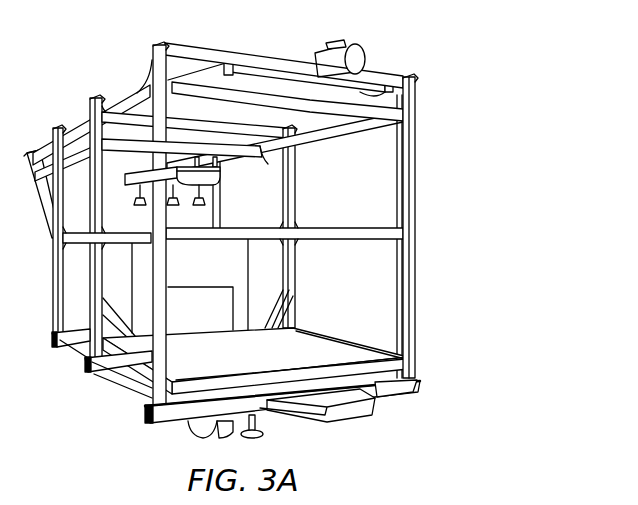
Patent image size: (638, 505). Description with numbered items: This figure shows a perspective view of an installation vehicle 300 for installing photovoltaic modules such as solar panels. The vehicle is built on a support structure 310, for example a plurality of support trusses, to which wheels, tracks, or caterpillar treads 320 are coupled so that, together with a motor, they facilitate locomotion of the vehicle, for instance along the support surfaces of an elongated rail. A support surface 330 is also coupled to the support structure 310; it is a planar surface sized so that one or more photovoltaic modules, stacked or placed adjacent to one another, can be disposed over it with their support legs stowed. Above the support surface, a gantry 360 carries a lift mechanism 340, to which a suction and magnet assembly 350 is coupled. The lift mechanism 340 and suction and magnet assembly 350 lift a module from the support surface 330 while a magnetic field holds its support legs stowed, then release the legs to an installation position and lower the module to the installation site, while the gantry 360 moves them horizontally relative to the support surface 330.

The installation vehicle 300 is at (305, 244).
The support structure 310 is at (415, 130).
The wheels, tracks, or caterpillar treads 320 is at (198, 436).
The support surface 330 is at (393, 367).
The lift mechanism 340 is at (220, 176).
The suction and magnet assembly 350 is at (207, 202).
The gantry 360 is at (387, 80).